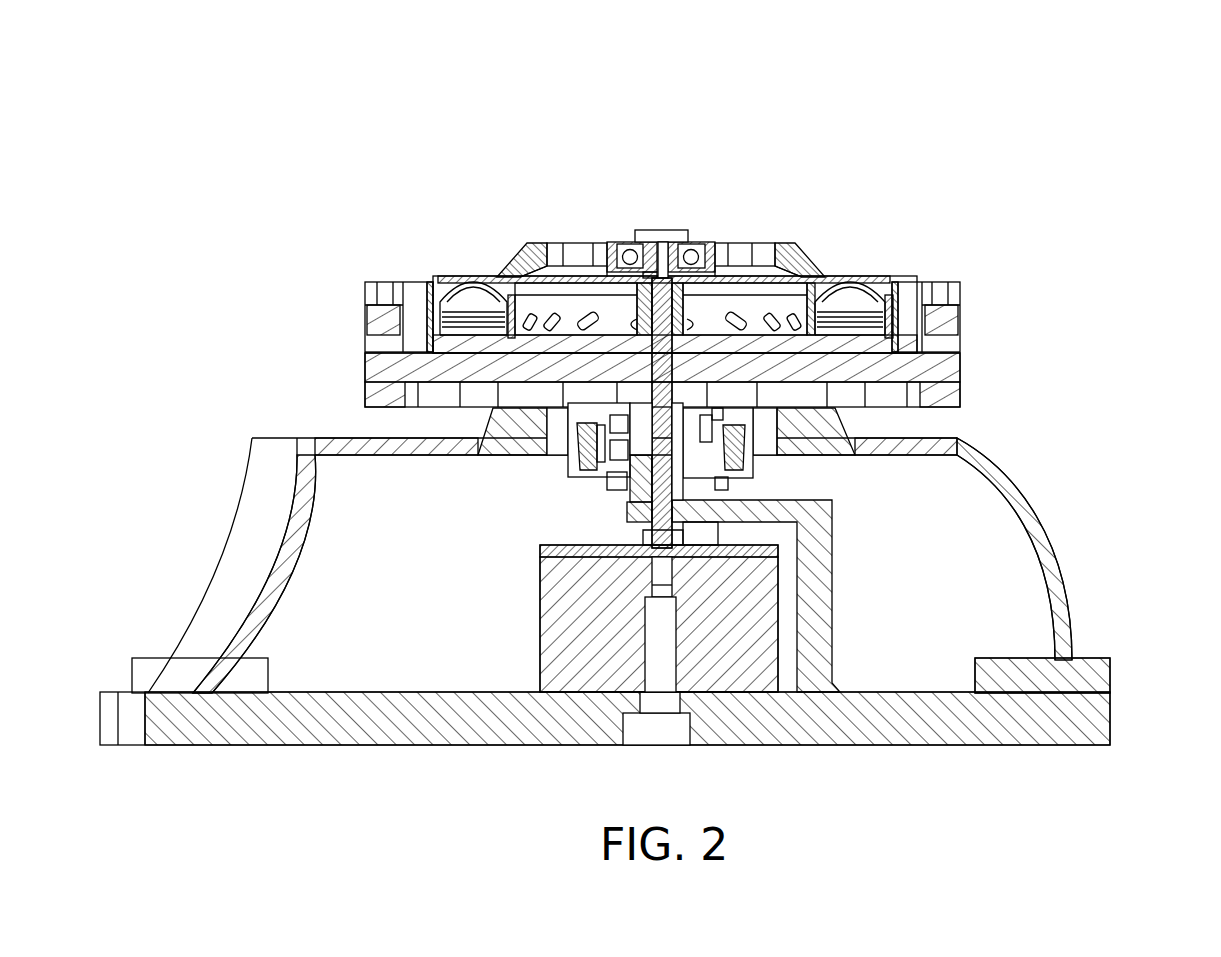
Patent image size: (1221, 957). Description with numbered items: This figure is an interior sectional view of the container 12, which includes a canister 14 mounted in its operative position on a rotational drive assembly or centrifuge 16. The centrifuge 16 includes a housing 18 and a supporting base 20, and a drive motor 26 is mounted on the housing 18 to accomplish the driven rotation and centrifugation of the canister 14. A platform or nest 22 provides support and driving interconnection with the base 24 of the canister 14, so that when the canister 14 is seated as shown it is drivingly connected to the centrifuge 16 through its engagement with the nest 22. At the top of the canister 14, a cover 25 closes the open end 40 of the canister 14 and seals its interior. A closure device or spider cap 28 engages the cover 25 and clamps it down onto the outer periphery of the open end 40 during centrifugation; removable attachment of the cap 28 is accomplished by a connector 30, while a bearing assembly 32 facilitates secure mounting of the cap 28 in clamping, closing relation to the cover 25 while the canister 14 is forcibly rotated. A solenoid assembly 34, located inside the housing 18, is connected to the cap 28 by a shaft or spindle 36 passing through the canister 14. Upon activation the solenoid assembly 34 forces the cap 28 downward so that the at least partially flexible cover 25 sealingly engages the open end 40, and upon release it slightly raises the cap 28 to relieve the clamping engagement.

The container 12 is at (726, 168).
The canister 14 is at (852, 270).
The rotational drive assembly 16 is at (1080, 550).
The housing 18 is at (228, 528).
The supporting base 20 is at (863, 753).
The platform 22 is at (357, 370).
The base of the canister 24 is at (952, 345).
The cover 25 is at (458, 277).
The drive motor 26 is at (560, 440).
The spider cap 28 is at (592, 238).
The connector 30 is at (652, 225).
The bearing assembly 32 is at (708, 235).
The solenoid assembly 34 is at (530, 632).
The shaft 36 is at (650, 512).
The open end 40 is at (893, 287).